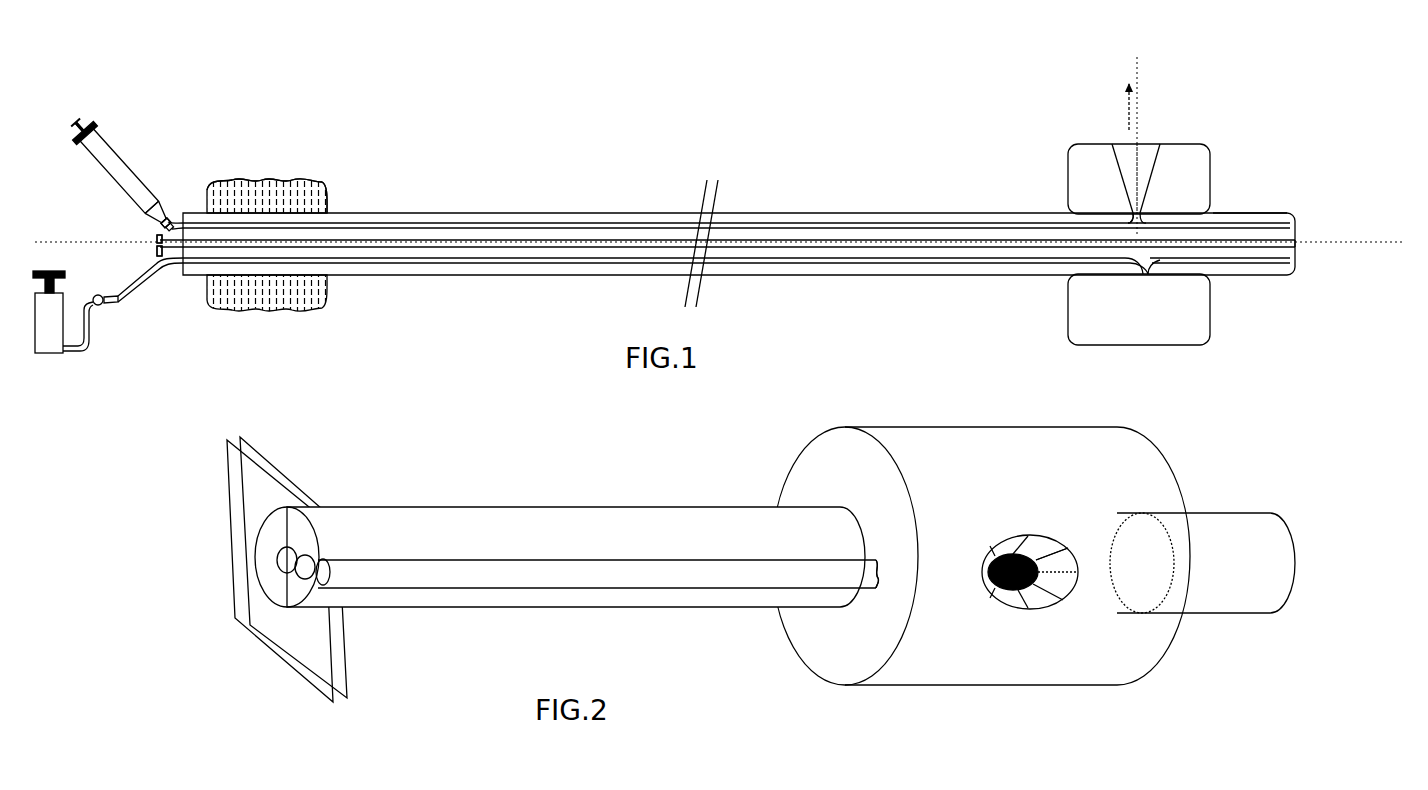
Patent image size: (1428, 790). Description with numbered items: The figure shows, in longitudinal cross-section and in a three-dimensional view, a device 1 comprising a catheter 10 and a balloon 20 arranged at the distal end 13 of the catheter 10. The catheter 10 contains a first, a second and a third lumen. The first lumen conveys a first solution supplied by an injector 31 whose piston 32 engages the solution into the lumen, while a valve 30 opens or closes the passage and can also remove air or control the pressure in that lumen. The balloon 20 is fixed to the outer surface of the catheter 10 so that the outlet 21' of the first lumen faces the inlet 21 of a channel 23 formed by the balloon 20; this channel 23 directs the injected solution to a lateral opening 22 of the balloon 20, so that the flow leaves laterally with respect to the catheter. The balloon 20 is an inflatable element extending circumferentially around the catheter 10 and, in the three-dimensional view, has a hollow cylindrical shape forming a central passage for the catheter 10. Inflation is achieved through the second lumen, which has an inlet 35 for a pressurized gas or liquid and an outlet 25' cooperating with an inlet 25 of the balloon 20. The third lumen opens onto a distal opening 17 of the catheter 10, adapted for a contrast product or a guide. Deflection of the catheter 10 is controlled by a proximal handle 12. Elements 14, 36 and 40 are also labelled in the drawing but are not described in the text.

In FIG. 1, the device 1 is at (990, 128).
In FIG. 2, the device 1 is at (746, 466).
In FIG. 1, the catheter 10 is at (540, 283).
In FIG. 2, the catheter 10 is at (491, 504).
In FIG. 1, the proximal handle 12 is at (305, 293).
In FIG. 1, the distal end 13 is at (1257, 285).
In FIG. 2, the distal end 13 is at (1243, 624).
In FIG. 1, the balloon outer wall 14 is at (338, 204).
In FIG. 1, the distal opening 17 is at (1300, 243).
In FIG. 1, the balloon 20 is at (1068, 176).
In FIG. 2, the balloon 20 is at (940, 445).
In FIG. 1, the inlet 21 is at (1160, 183).
In FIG. 1, the outlet 21' is at (1173, 225).
In FIG. 1, the lateral opening 22 is at (1145, 140).
In FIG. 2, the lateral opening 22 is at (1010, 598).
In FIG. 1, the channel 23 is at (1142, 166).
In FIG. 2, the channel 23 is at (1060, 560).
In FIG. 1, the inlet 25 is at (1118, 299).
In FIG. 1, the outlet 25' is at (1188, 263).
In FIG. 2, the outlet 25' is at (844, 610).
In FIG. 1, the valve 30 is at (170, 214).
In FIG. 1, the injector 31 is at (118, 170).
In FIG. 1, the piston 32 is at (80, 120).
In FIG. 1, the inlet 35 is at (120, 303).
In FIG. 1, the second solution reservoir / pump 36 is at (48, 355).
In FIG. 1, the proximal end caps 40 is at (156, 251).